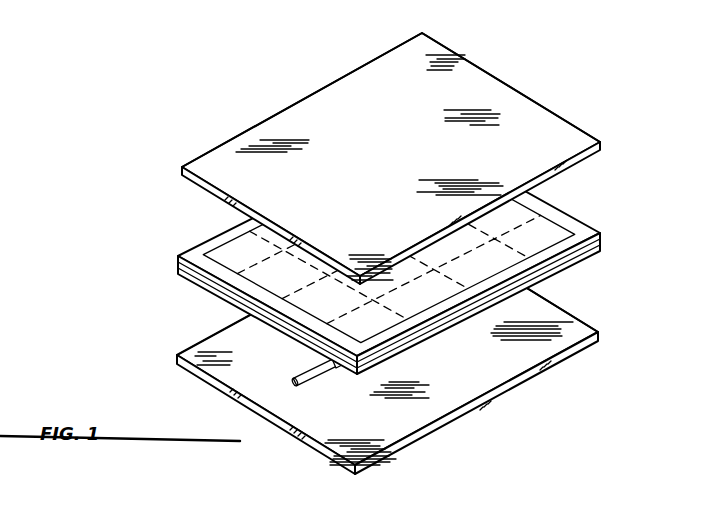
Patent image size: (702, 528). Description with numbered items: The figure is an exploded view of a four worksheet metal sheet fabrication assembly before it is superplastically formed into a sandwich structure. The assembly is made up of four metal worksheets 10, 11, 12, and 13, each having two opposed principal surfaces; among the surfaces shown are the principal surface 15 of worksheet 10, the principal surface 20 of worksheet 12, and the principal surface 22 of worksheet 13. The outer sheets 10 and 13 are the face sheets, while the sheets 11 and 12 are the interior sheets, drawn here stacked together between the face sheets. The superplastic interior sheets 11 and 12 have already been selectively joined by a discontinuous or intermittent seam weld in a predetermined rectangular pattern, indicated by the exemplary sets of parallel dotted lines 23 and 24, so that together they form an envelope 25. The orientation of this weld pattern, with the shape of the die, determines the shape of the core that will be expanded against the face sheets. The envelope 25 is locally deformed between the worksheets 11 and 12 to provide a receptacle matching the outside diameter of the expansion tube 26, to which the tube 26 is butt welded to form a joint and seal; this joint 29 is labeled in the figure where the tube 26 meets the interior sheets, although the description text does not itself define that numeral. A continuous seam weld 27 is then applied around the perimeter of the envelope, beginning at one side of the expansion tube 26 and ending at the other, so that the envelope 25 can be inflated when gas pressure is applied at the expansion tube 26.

The metal worksheet 10 is at (600, 337).
The metal worksheet 11 is at (604, 247).
The metal worksheet 12 is at (600, 235).
The metal worksheet 13 is at (606, 148).
The principal surface 15 is at (562, 333).
The principal surface 20 is at (558, 232).
The principal surface 22 is at (480, 83).
The parallel dotted lines 23 is at (430, 348).
The parallel dotted lines 24 is at (286, 343).
The envelope 25 is at (136, 260).
The expansion tube 26 is at (320, 386).
The continuous seam weld 27 is at (193, 278).
The fitting 29 is at (350, 380).